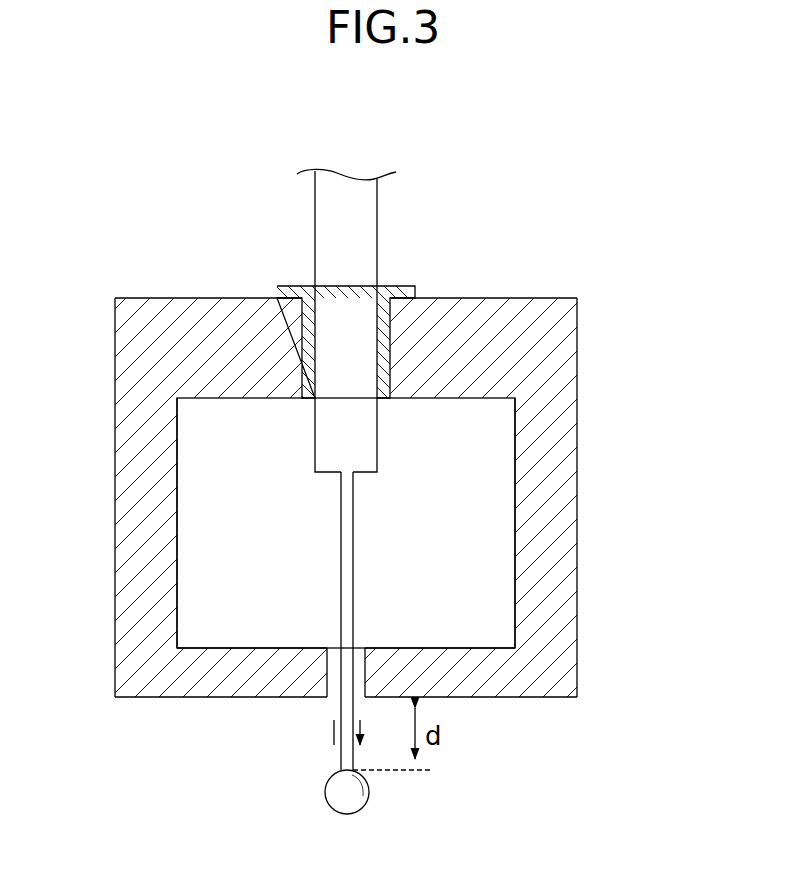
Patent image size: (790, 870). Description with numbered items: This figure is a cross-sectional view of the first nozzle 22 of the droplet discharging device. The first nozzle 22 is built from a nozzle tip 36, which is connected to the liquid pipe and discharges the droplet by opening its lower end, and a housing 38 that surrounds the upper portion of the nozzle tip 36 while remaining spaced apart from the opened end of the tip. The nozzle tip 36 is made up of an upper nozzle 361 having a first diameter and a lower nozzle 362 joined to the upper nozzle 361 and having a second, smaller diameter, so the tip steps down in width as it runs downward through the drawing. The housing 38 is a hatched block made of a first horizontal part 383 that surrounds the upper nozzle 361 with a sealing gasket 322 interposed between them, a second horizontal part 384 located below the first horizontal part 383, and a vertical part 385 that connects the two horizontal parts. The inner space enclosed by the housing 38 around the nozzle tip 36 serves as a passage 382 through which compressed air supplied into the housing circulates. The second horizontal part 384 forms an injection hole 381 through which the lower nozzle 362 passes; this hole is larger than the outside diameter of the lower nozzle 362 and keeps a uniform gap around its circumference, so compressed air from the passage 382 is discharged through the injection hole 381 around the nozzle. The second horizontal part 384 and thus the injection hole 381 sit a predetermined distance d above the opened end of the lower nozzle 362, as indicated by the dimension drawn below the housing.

The first nozzle 22 is at (612, 425).
The nozzle tip 36 is at (645, 487).
The upper nozzle 361 is at (363, 442).
The lower nozzle 362 is at (354, 544).
The housing 38 is at (115, 463).
The injection hole 381 is at (331, 698).
The passage 382 is at (247, 452).
The first horizontal part 383 is at (515, 325).
The second horizontal part 384 is at (185, 680).
The vertical part 385 is at (135, 378).
The sealing gasket 322 is at (404, 287).